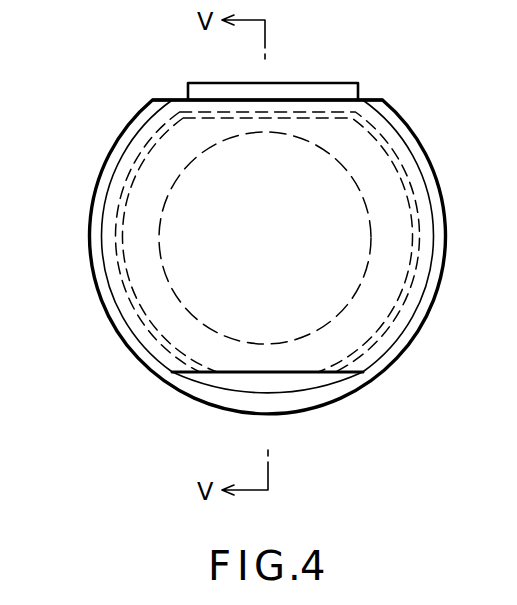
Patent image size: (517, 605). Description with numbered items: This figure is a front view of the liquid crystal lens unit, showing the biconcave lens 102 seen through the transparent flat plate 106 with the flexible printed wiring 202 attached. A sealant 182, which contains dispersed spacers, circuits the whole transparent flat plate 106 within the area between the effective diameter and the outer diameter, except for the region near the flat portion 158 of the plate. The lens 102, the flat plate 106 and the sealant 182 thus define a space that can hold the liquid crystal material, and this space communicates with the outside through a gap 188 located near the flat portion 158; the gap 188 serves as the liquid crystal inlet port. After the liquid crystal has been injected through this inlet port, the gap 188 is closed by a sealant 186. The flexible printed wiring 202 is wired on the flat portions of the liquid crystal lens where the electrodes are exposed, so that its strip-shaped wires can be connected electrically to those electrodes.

The biconcave lens 102 is at (99, 178).
The transparent flat plate 106 is at (146, 353).
The flat portion 158 is at (352, 374).
The sealant 182 is at (408, 178).
The sealant 186 is at (294, 388).
The gap 188 is at (258, 372).
The flexible printed wiring 202 is at (313, 82).